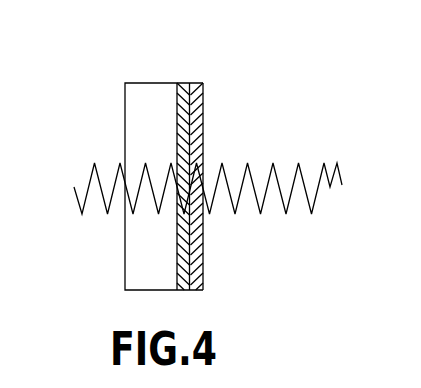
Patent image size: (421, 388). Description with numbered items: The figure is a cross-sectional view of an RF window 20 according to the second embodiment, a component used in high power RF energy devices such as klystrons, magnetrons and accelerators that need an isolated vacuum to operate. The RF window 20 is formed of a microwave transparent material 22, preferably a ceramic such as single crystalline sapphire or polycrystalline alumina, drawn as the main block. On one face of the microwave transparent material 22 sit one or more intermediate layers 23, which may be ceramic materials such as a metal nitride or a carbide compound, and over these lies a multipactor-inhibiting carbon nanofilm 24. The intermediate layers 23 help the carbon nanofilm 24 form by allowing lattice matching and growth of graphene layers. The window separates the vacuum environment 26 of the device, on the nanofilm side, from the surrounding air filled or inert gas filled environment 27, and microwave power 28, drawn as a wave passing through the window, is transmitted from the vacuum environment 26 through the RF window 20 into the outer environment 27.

The RF window 20 is at (117, 65).
The microwave transparent material 22 is at (124, 259).
The intermediate layers 23 is at (177, 83).
The multipactor-inhibiting carbon nanofilm 24 is at (205, 93).
The vacuum environment 26 is at (235, 130).
The air filled or inert gas filled environment 27 is at (101, 138).
The microwave power 28 is at (343, 173).